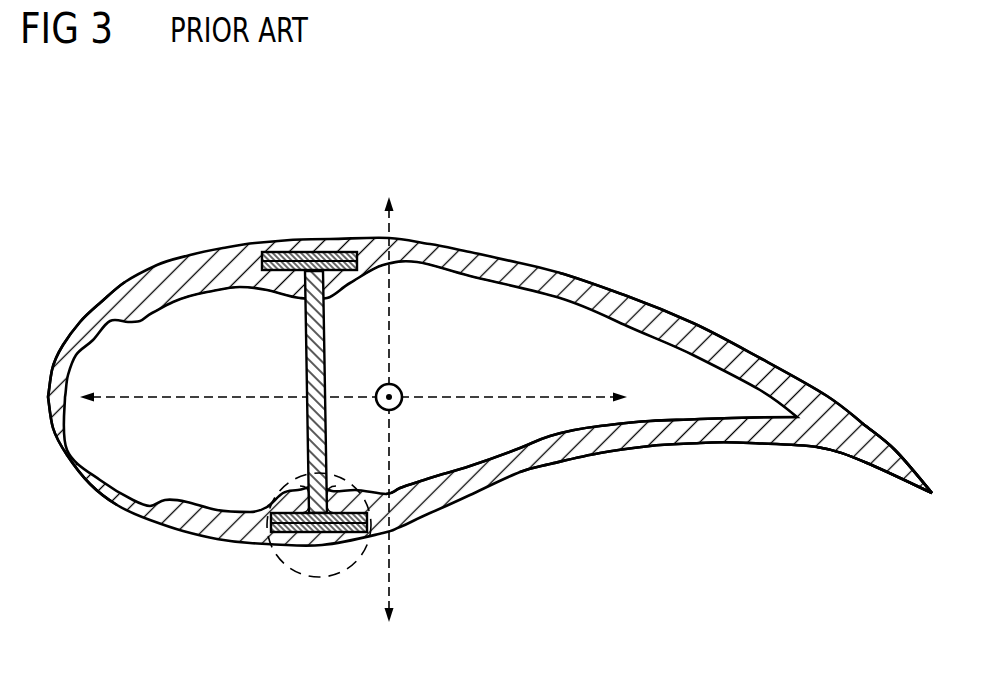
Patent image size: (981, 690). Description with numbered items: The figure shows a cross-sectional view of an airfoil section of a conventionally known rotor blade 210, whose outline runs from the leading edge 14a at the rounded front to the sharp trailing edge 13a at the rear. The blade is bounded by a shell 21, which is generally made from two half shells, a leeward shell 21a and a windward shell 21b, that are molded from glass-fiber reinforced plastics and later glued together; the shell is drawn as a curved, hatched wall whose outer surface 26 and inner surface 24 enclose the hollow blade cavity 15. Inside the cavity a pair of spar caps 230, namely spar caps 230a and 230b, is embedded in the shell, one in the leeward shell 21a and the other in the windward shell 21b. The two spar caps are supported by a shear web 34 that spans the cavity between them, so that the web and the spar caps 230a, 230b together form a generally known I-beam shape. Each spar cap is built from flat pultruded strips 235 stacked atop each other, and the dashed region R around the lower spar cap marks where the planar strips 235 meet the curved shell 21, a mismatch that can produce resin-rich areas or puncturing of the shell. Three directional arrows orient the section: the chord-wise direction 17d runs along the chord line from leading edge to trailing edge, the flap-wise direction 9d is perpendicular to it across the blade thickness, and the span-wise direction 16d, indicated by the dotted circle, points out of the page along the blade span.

The rotor blade 210 is at (141, 176).
The outer surface of airfoil wall 26 is at (540, 268).
The shell 21 is at (638, 303).
The leeward shell 21a is at (698, 337).
The windward shell 21b is at (640, 435).
The inner surface of airfoil wall 24 is at (497, 480).
The leading edge 14a is at (53, 435).
The trailing edge 13a is at (886, 494).
The blade cavity 15 is at (583, 365).
The chord-wise direction 17d is at (488, 400).
The flap-wise direction 9d is at (391, 590).
The span-wise direction 16d is at (403, 393).
The shear web 34 is at (306, 424).
The spar caps 230 is at (302, 395).
The spar cap 230a is at (310, 237).
The spar cap 230b is at (320, 556).
The pultruded strips 235 is at (350, 505).
The region R is at (258, 556).